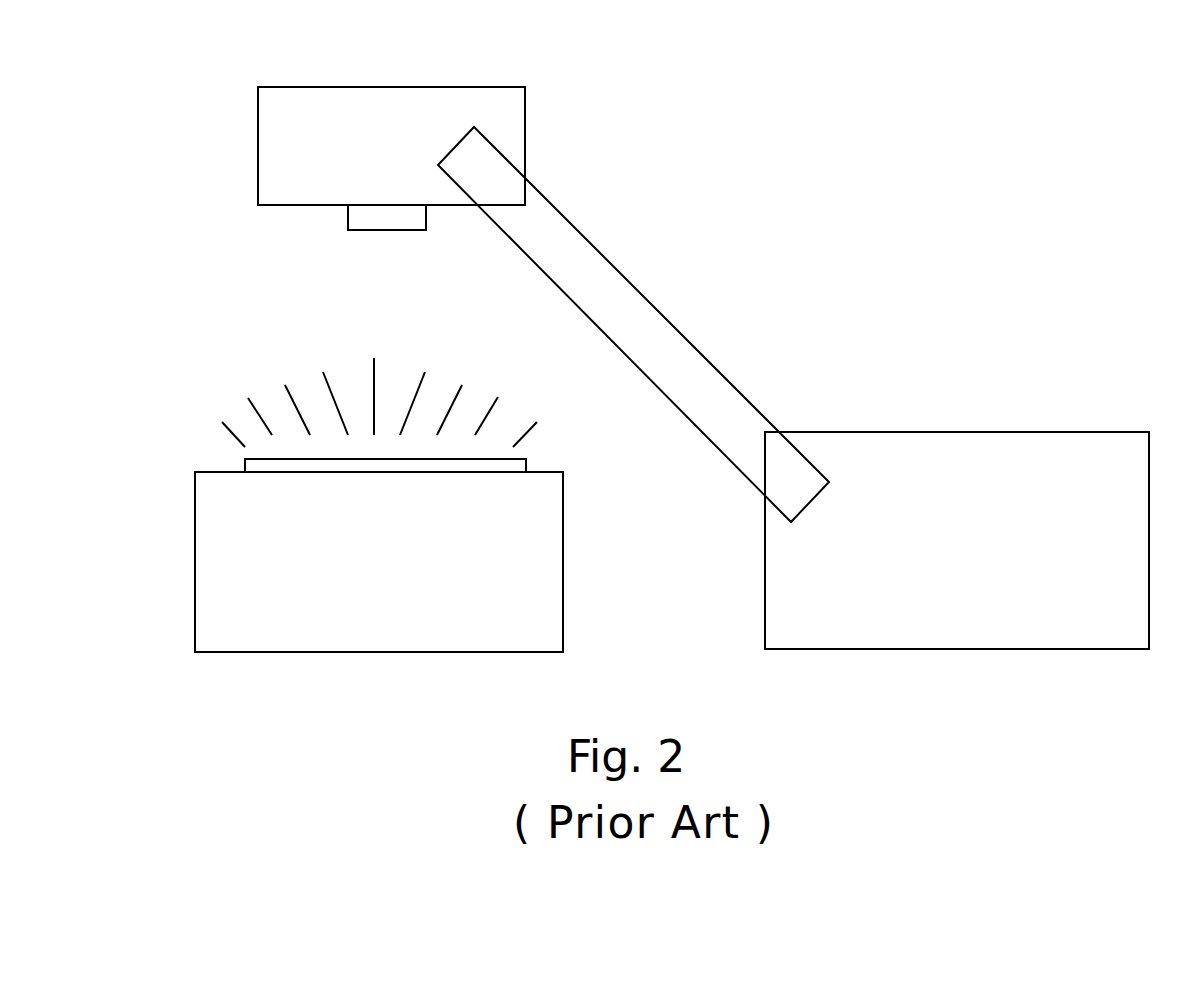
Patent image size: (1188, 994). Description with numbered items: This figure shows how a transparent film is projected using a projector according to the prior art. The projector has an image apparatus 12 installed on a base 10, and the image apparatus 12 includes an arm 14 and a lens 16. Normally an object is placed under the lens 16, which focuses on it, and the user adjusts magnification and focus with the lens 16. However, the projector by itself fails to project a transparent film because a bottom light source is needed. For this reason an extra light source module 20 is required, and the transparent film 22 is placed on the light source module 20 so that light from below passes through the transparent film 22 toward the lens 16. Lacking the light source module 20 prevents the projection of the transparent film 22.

The base 10 is at (1073, 457).
The image apparatus 12 is at (692, 297).
The arm 14 is at (715, 422).
The lens 16 is at (487, 102).
The light source module 20 is at (312, 587).
The transparent film 22 is at (290, 460).